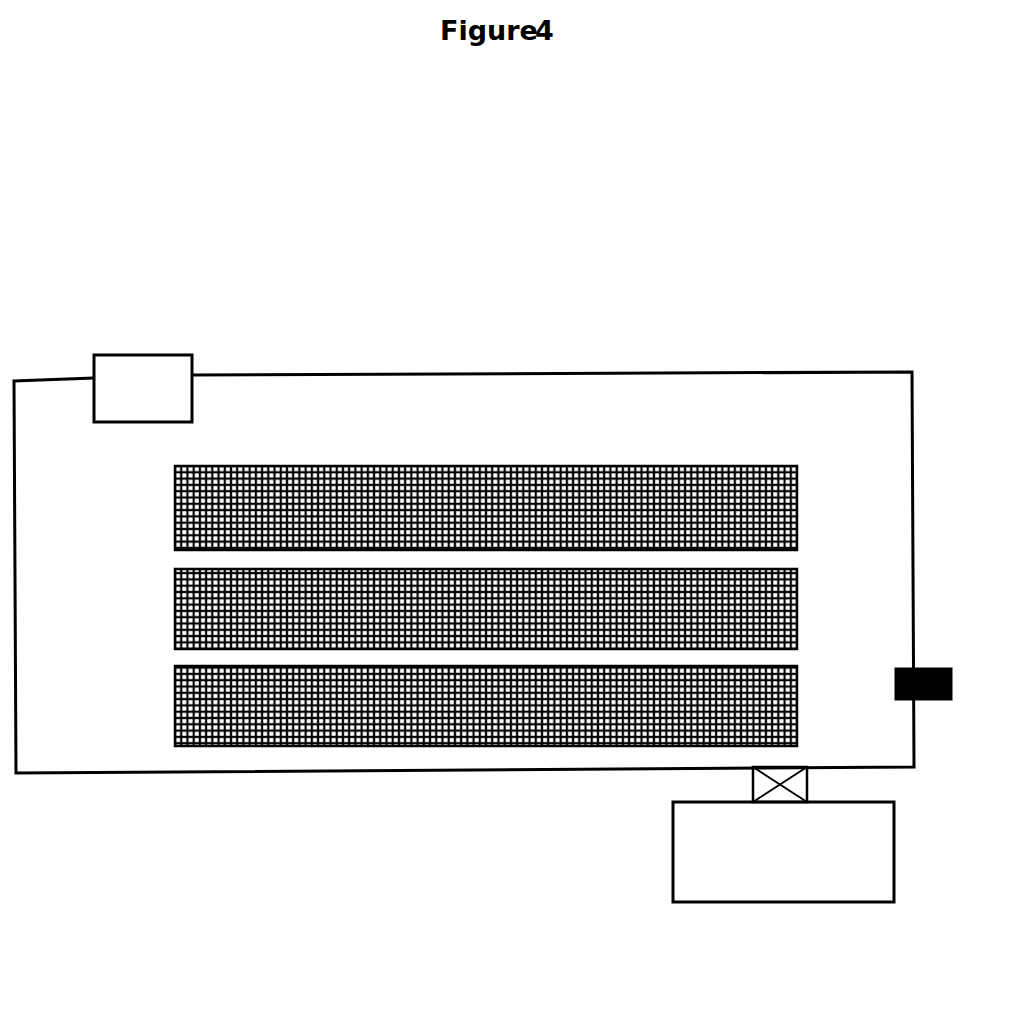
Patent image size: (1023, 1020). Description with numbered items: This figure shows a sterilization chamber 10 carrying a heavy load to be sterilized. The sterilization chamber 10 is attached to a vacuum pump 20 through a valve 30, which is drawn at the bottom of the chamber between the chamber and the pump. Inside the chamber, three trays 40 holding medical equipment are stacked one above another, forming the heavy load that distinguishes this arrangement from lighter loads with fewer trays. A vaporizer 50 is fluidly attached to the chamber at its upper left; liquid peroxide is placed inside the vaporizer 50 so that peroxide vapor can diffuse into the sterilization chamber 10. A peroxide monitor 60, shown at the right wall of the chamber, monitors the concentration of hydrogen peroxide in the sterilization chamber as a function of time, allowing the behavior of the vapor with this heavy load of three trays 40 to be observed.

The sterilization chamber 10 is at (693, 362).
The vacuum pump 20 is at (652, 861).
The valve 30 is at (705, 793).
The tray 40 is at (812, 480).
The vaporizer 50 is at (210, 340).
The peroxide monitor 60 is at (945, 657).